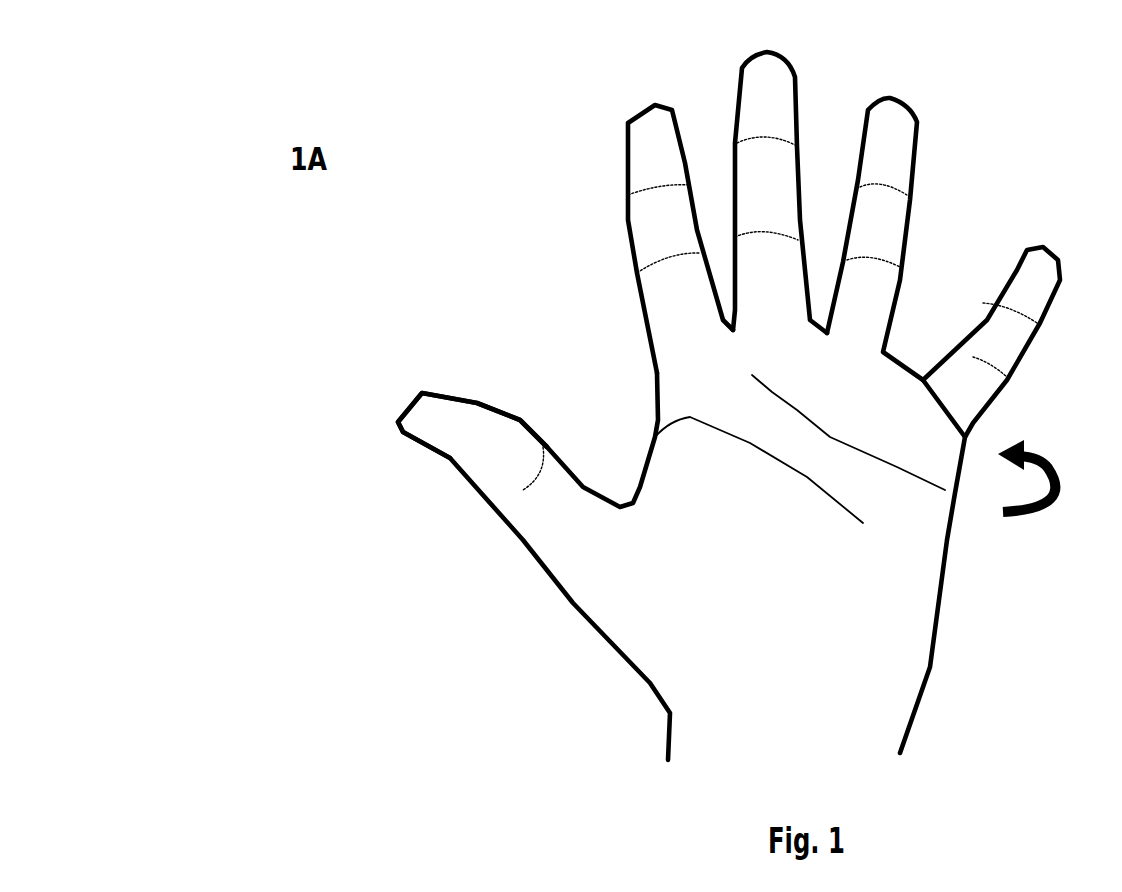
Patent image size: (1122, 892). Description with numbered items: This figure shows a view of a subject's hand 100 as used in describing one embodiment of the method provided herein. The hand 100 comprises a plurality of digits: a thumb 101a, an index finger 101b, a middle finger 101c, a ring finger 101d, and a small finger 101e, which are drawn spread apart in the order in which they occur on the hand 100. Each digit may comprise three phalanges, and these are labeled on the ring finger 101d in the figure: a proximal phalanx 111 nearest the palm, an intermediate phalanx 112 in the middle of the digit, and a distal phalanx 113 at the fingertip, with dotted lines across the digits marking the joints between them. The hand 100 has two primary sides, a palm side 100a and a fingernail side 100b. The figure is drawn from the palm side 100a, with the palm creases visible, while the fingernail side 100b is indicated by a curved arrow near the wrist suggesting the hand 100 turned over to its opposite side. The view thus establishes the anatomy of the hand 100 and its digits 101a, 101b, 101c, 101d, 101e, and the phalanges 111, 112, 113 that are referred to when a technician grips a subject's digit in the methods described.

The hand 100 is at (515, 229).
The palm side 100a is at (800, 449).
The fingernail side 100b is at (1006, 476).
The thumb 101a is at (448, 410).
The index finger 101b is at (670, 219).
The middle finger 101c is at (780, 170).
The ring finger 101d is at (917, 218).
The small finger 101e is at (1009, 322).
The proximal phalanx 111 is at (900, 305).
The intermediate phalanx 112 is at (912, 221).
The distal phalanx 113 is at (920, 137).